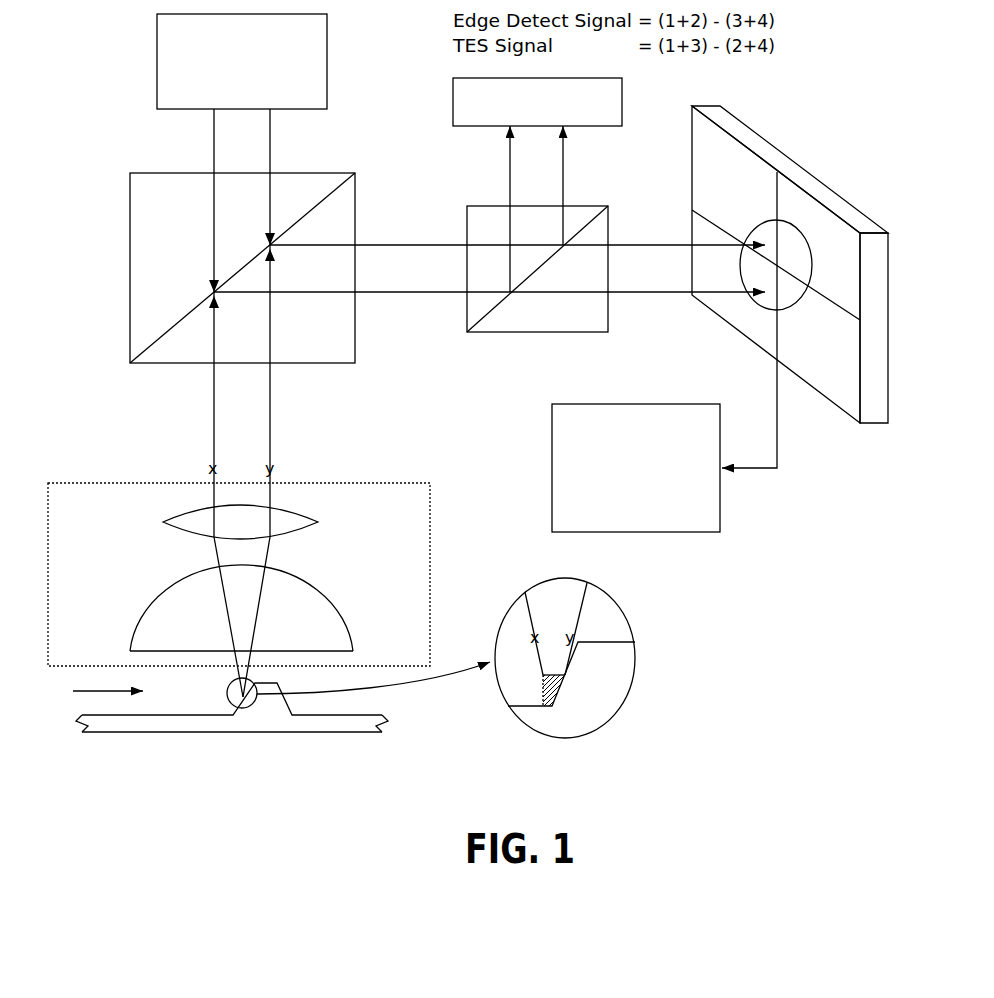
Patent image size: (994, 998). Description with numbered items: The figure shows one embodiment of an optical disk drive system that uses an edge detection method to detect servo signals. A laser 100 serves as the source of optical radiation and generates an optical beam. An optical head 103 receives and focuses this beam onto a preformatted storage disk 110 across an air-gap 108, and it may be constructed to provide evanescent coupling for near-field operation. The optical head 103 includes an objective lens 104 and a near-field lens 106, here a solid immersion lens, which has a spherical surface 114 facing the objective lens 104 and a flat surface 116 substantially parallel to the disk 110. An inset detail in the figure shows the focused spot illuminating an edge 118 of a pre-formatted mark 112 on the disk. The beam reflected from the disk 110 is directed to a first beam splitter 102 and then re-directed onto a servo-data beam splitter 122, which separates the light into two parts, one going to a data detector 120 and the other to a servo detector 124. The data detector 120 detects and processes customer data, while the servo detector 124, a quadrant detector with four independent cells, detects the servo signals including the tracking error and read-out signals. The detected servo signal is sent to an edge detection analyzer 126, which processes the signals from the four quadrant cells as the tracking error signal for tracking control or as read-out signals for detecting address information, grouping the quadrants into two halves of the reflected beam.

The laser 100 is at (157, 70).
The first beam splitter 102 is at (130, 267).
The optical head 103 is at (128, 483).
The objective lens 104 is at (163, 522).
The near-field lens 106 is at (327, 600).
The air-gap 108 is at (86, 690).
The preformatted storage disk 110 is at (325, 736).
The pre-formatted mark 112 is at (263, 708).
The spherical surface 114 is at (141, 623).
The flat surface 116 is at (172, 656).
The edge 118 is at (567, 683).
The data detector 120 is at (453, 95).
The servo-data beam splitter 122 is at (480, 206).
The servo detector 124 is at (807, 170).
The edge detection analyzer 126 is at (693, 532).